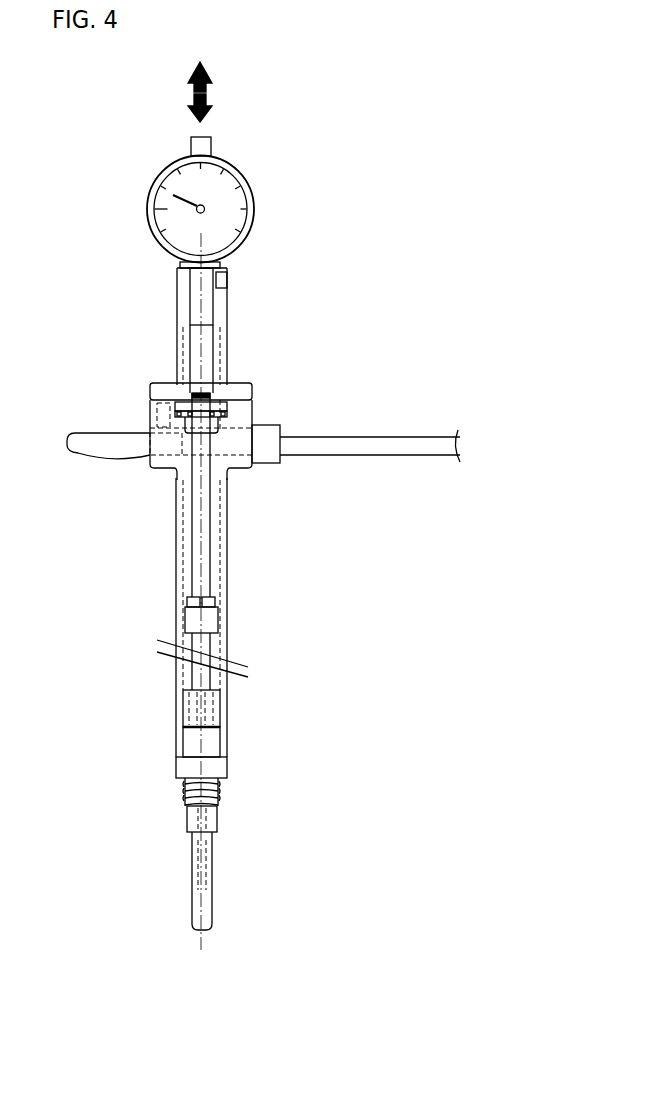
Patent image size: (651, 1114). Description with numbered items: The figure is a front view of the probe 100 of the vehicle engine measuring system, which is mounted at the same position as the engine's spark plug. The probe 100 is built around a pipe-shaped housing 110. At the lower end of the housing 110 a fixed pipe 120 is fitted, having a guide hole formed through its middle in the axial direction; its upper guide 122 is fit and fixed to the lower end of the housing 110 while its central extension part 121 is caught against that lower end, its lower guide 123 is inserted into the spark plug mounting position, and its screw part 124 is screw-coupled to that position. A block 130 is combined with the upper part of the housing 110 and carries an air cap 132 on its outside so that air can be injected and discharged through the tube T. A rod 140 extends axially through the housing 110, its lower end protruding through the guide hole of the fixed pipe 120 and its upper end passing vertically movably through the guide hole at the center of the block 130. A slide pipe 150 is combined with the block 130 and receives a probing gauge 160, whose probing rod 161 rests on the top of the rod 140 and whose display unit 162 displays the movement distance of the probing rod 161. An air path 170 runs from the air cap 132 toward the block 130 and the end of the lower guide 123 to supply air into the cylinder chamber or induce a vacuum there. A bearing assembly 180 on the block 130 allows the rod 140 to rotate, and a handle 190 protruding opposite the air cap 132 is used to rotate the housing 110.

The probe 100 is at (370, 326).
The housing 110 is at (223, 642).
The fixed pipe 120 is at (163, 769).
The central extension part 121 is at (228, 768).
The upper guide 122 is at (205, 742).
The lower guide 123 is at (218, 820).
The screw part 124 is at (218, 793).
The block 130 is at (260, 412).
The air cap 132 is at (282, 458).
The rod 140 is at (210, 557).
The slide pipe 150 is at (230, 337).
The probing gauge 160 is at (153, 161).
The probing rod 161 is at (190, 323).
The display unit 162 is at (162, 247).
The air path 170 is at (192, 832).
The bearing assembly 180 is at (176, 411).
The handle 190 is at (110, 463).
The tube T is at (398, 435).